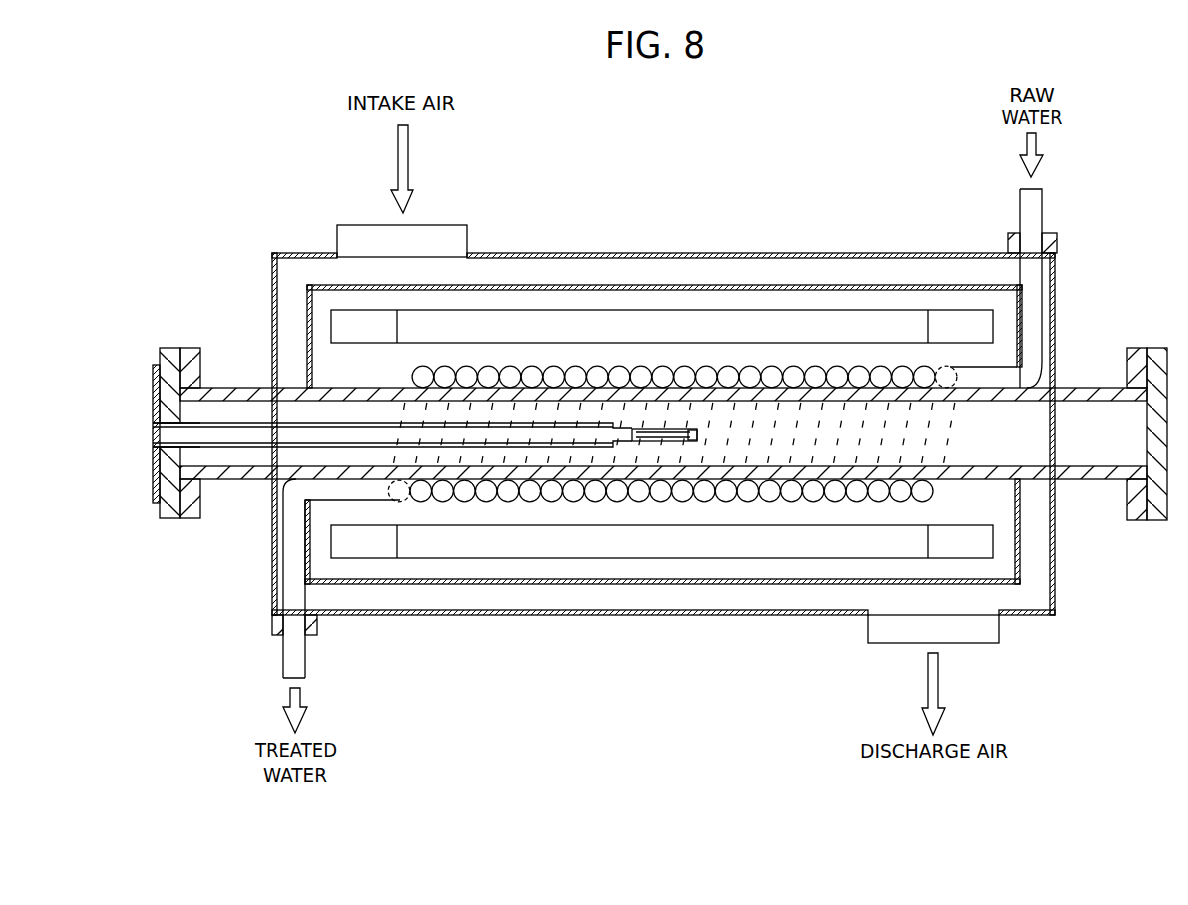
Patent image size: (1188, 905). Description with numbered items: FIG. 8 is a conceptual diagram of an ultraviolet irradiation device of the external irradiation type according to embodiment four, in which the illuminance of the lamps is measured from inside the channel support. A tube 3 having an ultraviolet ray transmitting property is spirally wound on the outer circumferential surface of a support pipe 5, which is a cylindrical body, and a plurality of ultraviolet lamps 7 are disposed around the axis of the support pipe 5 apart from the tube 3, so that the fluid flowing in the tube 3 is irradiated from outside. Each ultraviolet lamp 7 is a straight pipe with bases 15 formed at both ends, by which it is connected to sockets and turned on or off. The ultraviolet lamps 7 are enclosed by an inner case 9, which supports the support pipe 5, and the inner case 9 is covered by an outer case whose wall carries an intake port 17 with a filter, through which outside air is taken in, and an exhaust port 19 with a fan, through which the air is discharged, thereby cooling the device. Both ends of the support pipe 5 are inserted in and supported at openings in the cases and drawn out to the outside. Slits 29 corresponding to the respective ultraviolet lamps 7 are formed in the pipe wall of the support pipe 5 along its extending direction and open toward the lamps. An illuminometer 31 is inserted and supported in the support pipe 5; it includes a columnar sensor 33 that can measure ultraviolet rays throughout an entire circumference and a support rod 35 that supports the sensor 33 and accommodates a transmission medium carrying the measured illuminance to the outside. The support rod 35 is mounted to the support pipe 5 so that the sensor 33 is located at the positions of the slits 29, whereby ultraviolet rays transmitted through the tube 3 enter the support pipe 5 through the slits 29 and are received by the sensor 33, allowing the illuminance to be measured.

The tube 3 is at (1043, 204).
The support pipe 5 is at (1085, 390).
The ultraviolet lamps 7 is at (550, 310).
The inner case 9 is at (861, 287).
The bases 15 is at (338, 310).
The intake port 17 is at (448, 225).
The exhaust port 19 is at (1000, 630).
The slits 29 is at (640, 473).
The illuminometer 31 is at (153, 450).
The sensor 33 is at (681, 426).
The support rod 35 is at (225, 447).